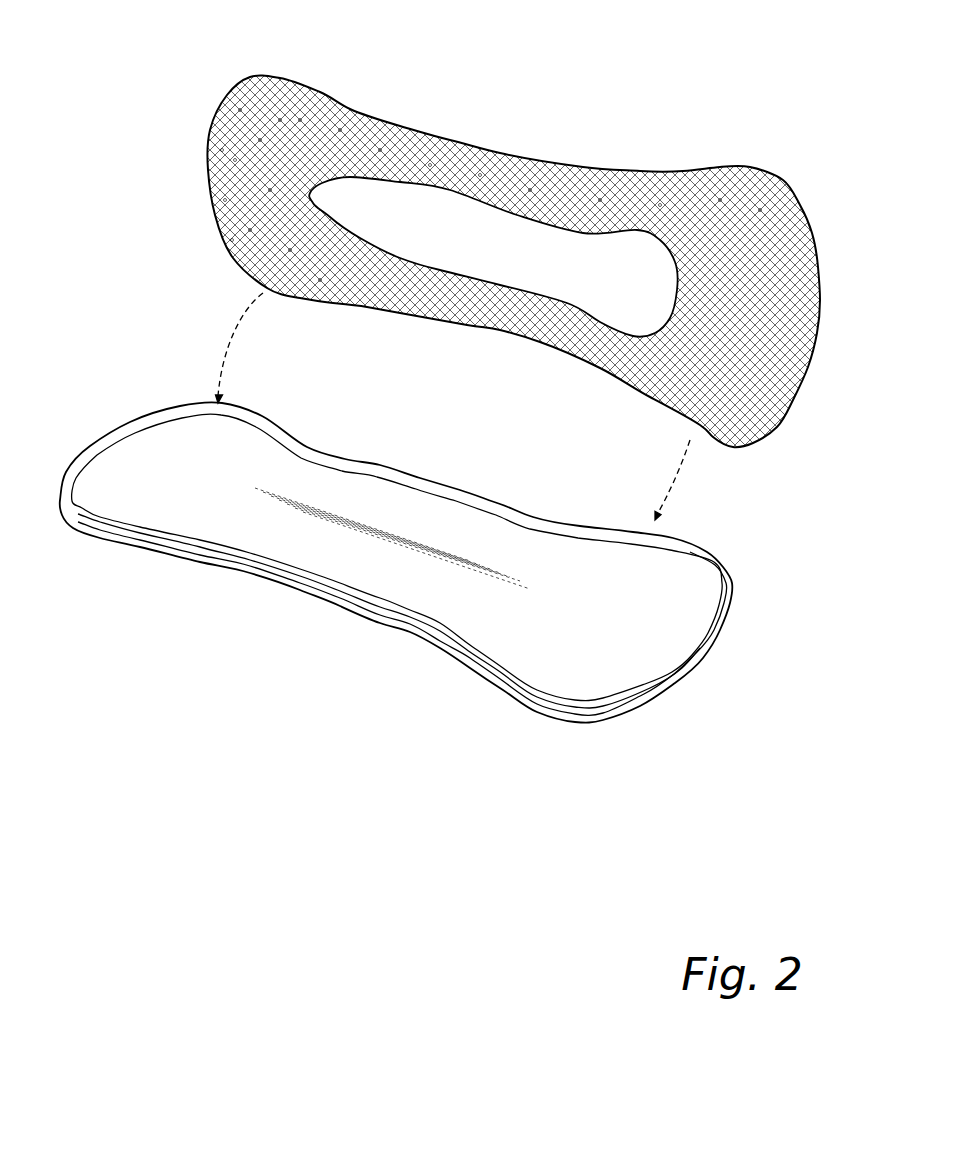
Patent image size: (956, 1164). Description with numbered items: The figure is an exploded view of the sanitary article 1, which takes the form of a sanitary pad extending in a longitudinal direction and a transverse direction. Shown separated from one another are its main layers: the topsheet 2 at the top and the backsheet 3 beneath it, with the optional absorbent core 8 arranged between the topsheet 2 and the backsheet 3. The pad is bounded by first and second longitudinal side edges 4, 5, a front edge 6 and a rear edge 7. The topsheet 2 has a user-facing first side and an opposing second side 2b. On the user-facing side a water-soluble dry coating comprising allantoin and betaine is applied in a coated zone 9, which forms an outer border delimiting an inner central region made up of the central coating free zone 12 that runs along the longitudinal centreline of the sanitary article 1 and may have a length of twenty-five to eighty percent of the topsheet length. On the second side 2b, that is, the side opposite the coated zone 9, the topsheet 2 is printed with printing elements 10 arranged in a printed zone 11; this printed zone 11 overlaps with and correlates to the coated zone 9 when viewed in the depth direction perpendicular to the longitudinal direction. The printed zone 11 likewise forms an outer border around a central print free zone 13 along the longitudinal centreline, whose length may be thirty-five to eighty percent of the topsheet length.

The sanitary article 1 is at (703, 137).
The topsheet 2 is at (458, 210).
The second side of the topsheet 2b is at (578, 203).
The backsheet 3 is at (173, 560).
The first longitudinal side edge 4 is at (390, 624).
The second longitudinal side edge 5 is at (380, 467).
The front edge 6 is at (707, 657).
The rear edge 7 is at (106, 446).
The absorbent core 8 is at (677, 590).
The coated zone 9 is at (212, 186).
The printing elements 10 is at (297, 100).
The printed zone 11 is at (237, 119).
The central coating free zone 12 is at (517, 265).
The central print free zone 13 is at (457, 255).